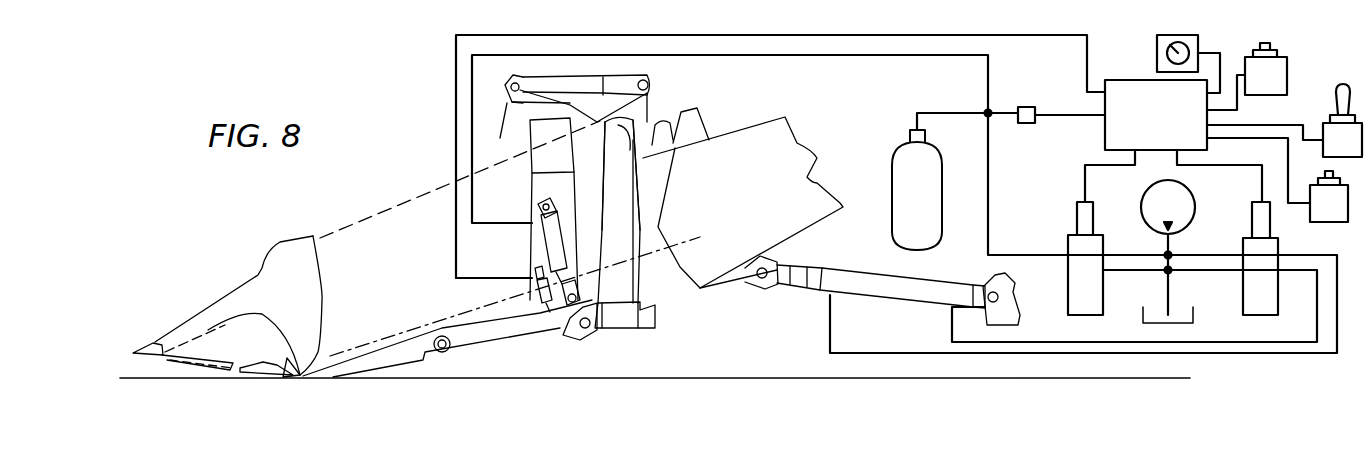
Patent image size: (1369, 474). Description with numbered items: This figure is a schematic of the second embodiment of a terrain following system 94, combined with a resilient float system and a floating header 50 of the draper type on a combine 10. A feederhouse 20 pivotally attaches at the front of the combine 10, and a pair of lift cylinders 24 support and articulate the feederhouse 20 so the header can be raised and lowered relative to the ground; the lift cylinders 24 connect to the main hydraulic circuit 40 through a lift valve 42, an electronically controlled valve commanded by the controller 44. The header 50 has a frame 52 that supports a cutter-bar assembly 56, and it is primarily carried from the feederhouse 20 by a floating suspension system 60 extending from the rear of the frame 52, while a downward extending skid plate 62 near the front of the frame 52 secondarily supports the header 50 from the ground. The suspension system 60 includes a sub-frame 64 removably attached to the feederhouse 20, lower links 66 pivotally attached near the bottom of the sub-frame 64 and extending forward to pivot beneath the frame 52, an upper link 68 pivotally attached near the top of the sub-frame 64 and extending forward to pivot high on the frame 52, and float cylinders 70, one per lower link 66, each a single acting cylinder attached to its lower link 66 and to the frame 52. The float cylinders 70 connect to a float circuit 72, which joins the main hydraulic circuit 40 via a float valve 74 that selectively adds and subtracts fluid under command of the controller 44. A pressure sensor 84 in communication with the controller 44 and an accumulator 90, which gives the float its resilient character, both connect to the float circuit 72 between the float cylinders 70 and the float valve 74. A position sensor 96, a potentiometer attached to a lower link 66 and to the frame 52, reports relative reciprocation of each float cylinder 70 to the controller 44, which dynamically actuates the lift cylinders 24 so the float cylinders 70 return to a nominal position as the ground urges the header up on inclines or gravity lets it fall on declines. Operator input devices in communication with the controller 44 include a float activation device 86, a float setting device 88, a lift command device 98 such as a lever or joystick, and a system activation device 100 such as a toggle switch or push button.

The combine 10 is at (1018, 313).
The feederhouse 20 is at (774, 175).
The lift cylinders 24 is at (861, 277).
The main hydraulic circuit 40 is at (1192, 277).
The lift valve 42 is at (1232, 241).
The controller 44 is at (1101, 131).
The floating header 50 is at (332, 218).
The frame 52 is at (382, 350).
The cutter-bar assembly 56 is at (255, 376).
The floating suspension system 60 is at (617, 339).
The skid plate 62 is at (325, 384).
The sub-frame 64 is at (630, 200).
The lower links 66 is at (517, 331).
The upper link 68 is at (587, 85).
The float cylinders 70 is at (558, 228).
The float circuit 72 is at (903, 60).
The float valve 74 is at (1068, 238).
The pressure sensor 84 is at (1025, 107).
The float activation device 86 is at (1340, 223).
The float setting device 88 is at (1157, 52).
The accumulator 90 is at (892, 177).
The terrain following system 94 is at (414, 136).
The position sensor 96 is at (535, 264).
The lift command device 98 is at (1322, 127).
The system activation device 100 is at (1247, 67).